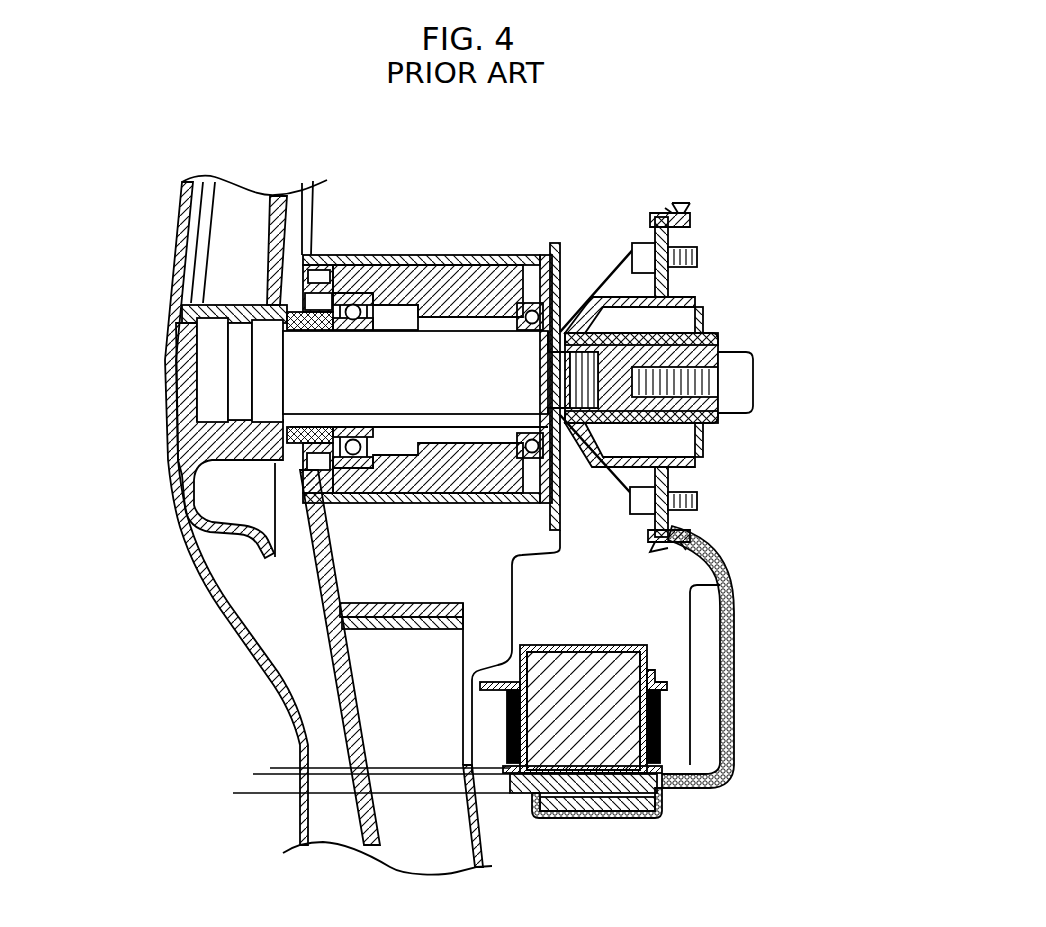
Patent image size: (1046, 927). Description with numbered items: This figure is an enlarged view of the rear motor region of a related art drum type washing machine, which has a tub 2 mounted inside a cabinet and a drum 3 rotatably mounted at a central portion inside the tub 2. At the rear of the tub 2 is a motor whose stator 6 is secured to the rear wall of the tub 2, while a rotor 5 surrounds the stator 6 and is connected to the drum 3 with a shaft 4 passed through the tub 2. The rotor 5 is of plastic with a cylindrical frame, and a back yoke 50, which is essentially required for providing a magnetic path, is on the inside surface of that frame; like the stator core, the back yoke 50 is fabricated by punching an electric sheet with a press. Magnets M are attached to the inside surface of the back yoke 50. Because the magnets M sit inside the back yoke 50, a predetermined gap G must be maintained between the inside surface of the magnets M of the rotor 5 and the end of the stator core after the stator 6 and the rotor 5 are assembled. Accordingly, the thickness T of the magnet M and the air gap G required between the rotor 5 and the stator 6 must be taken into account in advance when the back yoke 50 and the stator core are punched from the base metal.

The tub 2 is at (480, 833).
The drum 3 is at (268, 678).
The shaft 4 is at (447, 350).
The rotor 5 is at (729, 786).
The stator 6 is at (597, 647).
The back yoke 50 is at (619, 813).
The magnets M is at (562, 796).
The gap G is at (268, 790).
The thickness T is at (232, 755).